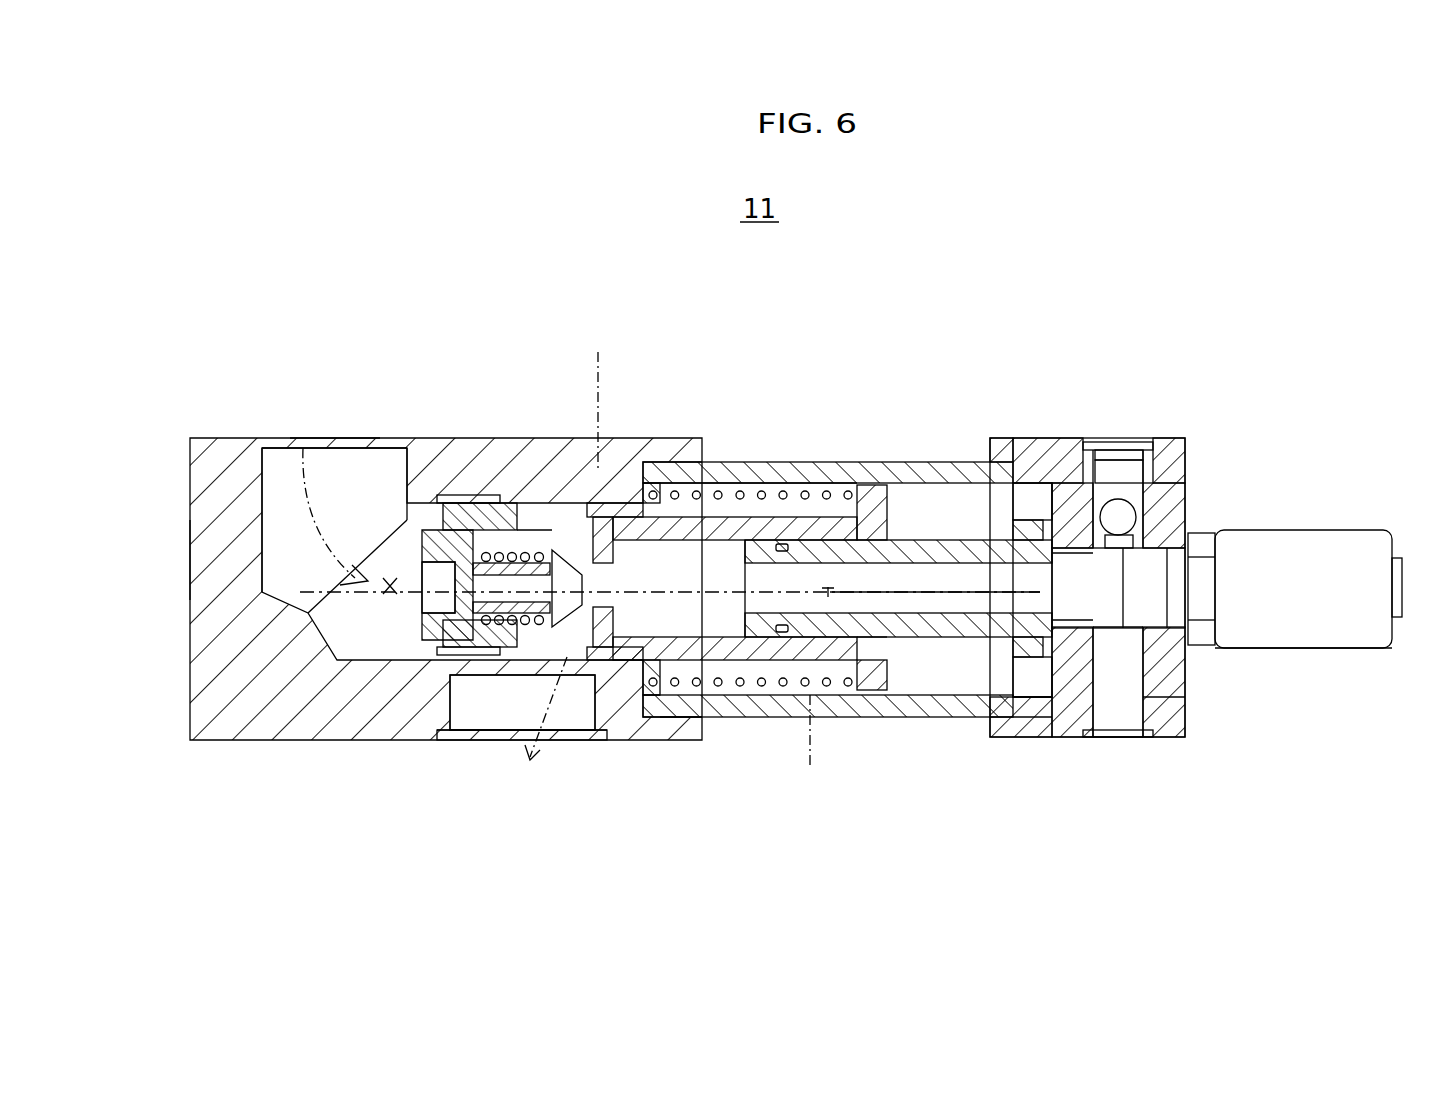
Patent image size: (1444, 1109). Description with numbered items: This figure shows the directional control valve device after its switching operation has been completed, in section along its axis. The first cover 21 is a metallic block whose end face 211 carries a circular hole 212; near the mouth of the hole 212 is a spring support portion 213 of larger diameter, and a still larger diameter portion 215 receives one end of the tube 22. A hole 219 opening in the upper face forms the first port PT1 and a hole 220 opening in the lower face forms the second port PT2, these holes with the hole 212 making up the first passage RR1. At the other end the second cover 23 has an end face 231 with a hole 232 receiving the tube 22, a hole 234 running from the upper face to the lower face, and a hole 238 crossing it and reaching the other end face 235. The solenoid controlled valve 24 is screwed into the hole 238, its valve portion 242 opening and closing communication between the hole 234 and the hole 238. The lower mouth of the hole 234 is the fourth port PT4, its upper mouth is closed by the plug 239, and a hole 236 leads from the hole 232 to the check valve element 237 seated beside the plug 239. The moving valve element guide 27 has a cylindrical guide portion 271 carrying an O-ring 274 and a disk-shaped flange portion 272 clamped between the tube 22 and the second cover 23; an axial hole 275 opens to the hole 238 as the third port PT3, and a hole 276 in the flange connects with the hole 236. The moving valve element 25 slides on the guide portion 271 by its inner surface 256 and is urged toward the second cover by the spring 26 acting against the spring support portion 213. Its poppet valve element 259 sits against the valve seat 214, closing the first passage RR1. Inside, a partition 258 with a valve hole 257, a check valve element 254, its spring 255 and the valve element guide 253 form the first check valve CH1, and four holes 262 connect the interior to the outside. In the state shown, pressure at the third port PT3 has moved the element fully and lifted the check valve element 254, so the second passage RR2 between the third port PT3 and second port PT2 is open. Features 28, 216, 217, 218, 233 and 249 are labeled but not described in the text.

The first cover 21 is at (240, 436).
The tube 22 is at (850, 462).
The second cover 23 is at (1190, 440).
The solenoid controlled valve 24 is at (1380, 528).
The moving valve element 25 is at (668, 517).
The spring 26 is at (820, 495).
The moving valve element guide 27 is at (913, 637).
The axis 28 is at (599, 402).
The end face 211 is at (713, 740).
The hole 212 is at (596, 520).
The spring support portion 213 is at (655, 690).
The valve seat 214 is at (338, 438).
The large diameter portion 215 is at (650, 695).
The partition wall 216 is at (455, 503).
The bottom plate 217 is at (420, 738).
The housing end wall 218 is at (190, 562).
The hole 219 is at (290, 505).
The hole 220 is at (495, 690).
The end face 231 is at (985, 455).
The hole 232 is at (1013, 710).
The block lower wall 233 is at (1150, 740).
The hole 234 is at (1168, 738).
The end face 235 is at (1185, 472).
The hole 236 is at (1105, 497).
The check valve element 237 is at (1165, 505).
The hole 238 is at (1113, 597).
The plug 239 is at (1130, 440).
The valve portion 242 is at (1118, 707).
The connector body 249 is at (1365, 620).
The valve element guide 253 is at (445, 672).
The check valve element 254 is at (470, 655).
The spring 255 is at (500, 503).
The inner surface 256 is at (850, 545).
The valve hole 257 is at (590, 607).
The partition 258 is at (622, 503).
The poppet valve element 259 is at (477, 678).
The holes 262 is at (575, 628).
The guide portion 271 is at (862, 640).
The flange portion 272 is at (1072, 495).
The O-ring 274 is at (782, 540).
The hole 275 is at (947, 595).
The hole 276 is at (1023, 500).
The first port PT1 is at (335, 438).
The second port PT2 is at (520, 760).
The third port PT3 is at (1020, 713).
The fourth port PT4 is at (1105, 745).
The first check valve CH1 is at (552, 533).
The first passage RR1 is at (350, 521).
The second passage RR2 is at (811, 744).